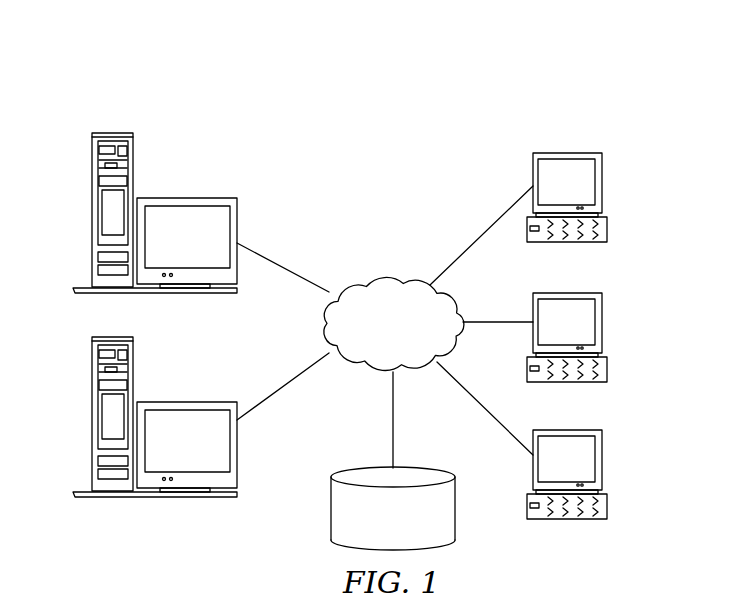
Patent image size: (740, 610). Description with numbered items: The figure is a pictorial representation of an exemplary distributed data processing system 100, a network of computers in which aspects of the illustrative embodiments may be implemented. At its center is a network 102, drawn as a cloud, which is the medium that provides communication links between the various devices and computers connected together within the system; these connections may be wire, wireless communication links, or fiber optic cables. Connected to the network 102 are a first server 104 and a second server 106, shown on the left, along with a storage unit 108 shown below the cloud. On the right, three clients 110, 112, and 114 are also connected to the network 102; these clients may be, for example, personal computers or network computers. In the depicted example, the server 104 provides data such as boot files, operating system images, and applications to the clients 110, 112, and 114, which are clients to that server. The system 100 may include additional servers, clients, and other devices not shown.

The distributed data processing system 100 is at (447, 140).
The network 102 is at (365, 277).
The server 104 is at (91, 212).
The server 106 is at (91, 418).
The storage unit 108 is at (331, 508).
The client 110 is at (602, 181).
The client 112 is at (602, 321).
The client 114 is at (602, 460).